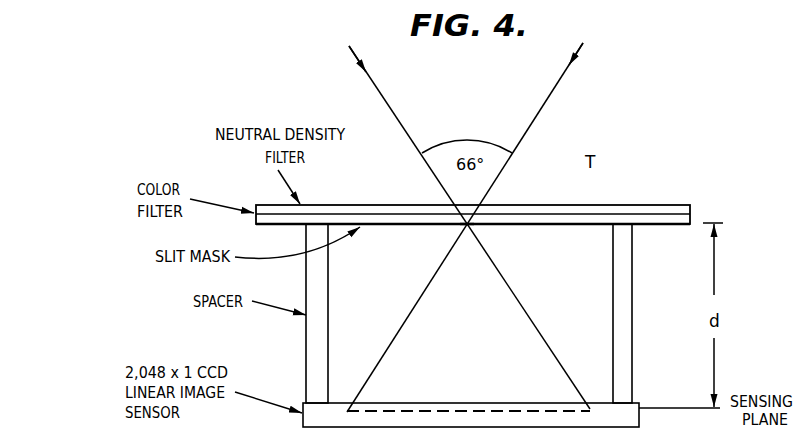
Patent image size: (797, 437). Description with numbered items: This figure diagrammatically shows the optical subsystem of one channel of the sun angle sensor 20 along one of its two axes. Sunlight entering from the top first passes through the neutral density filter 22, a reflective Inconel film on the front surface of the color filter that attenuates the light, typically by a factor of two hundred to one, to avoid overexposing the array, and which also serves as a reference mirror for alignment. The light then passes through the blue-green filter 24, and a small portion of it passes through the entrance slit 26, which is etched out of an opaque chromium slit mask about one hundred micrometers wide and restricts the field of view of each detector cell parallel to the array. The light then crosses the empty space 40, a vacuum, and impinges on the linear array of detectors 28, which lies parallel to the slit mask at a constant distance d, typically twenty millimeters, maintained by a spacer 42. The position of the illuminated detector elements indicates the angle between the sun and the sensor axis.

The sun angle sensor 20 is at (706, 137).
The neutral density filter 22 is at (638, 204).
The optical blue-green filter 24 is at (692, 219).
The entrance slit 26 is at (466, 226).
The linear array of light sensors 28 is at (427, 403).
The empty space 40 is at (476, 315).
The spacer 42 is at (307, 335).